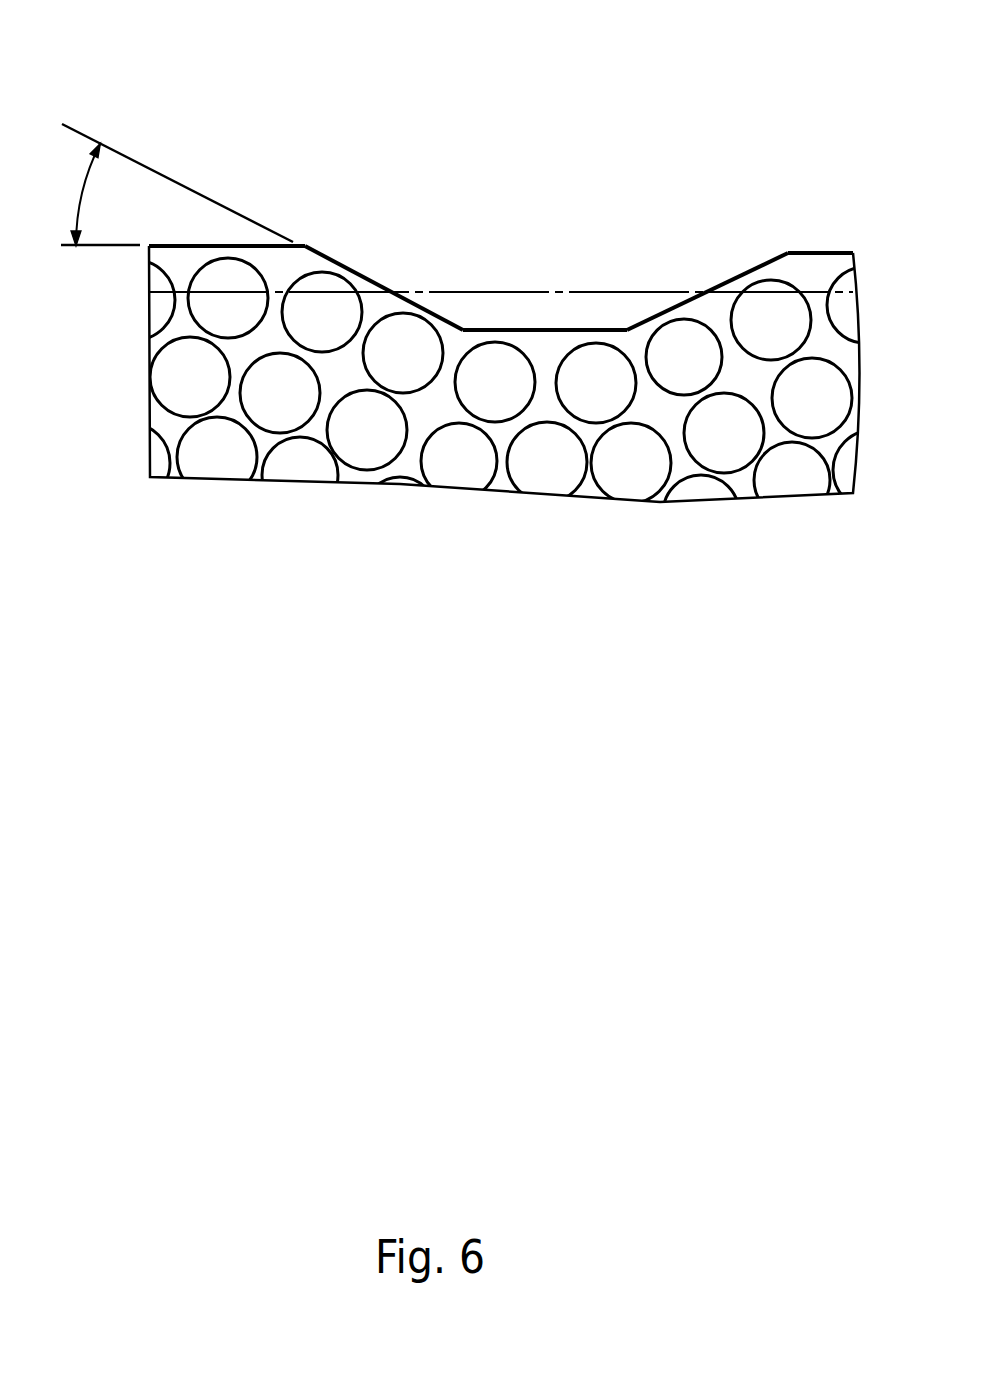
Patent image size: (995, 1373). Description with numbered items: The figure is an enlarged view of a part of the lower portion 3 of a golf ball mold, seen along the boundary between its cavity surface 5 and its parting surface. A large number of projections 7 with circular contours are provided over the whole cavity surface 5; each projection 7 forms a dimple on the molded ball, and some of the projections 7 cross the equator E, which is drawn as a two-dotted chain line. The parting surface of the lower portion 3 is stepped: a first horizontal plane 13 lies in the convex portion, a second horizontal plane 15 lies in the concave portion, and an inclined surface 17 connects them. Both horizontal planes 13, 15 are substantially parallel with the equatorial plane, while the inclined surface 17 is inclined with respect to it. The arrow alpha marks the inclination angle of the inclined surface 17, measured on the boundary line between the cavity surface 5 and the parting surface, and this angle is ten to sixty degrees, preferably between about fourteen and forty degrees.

The lower portion 3 is at (842, 42).
The cavity surface 5 is at (592, 487).
The projections 7 is at (273, 402).
The first horizontal plane 13 is at (197, 246).
The second horizontal plane 15 is at (590, 330).
The inclined surface 17 is at (360, 268).
The equator E is at (504, 292).